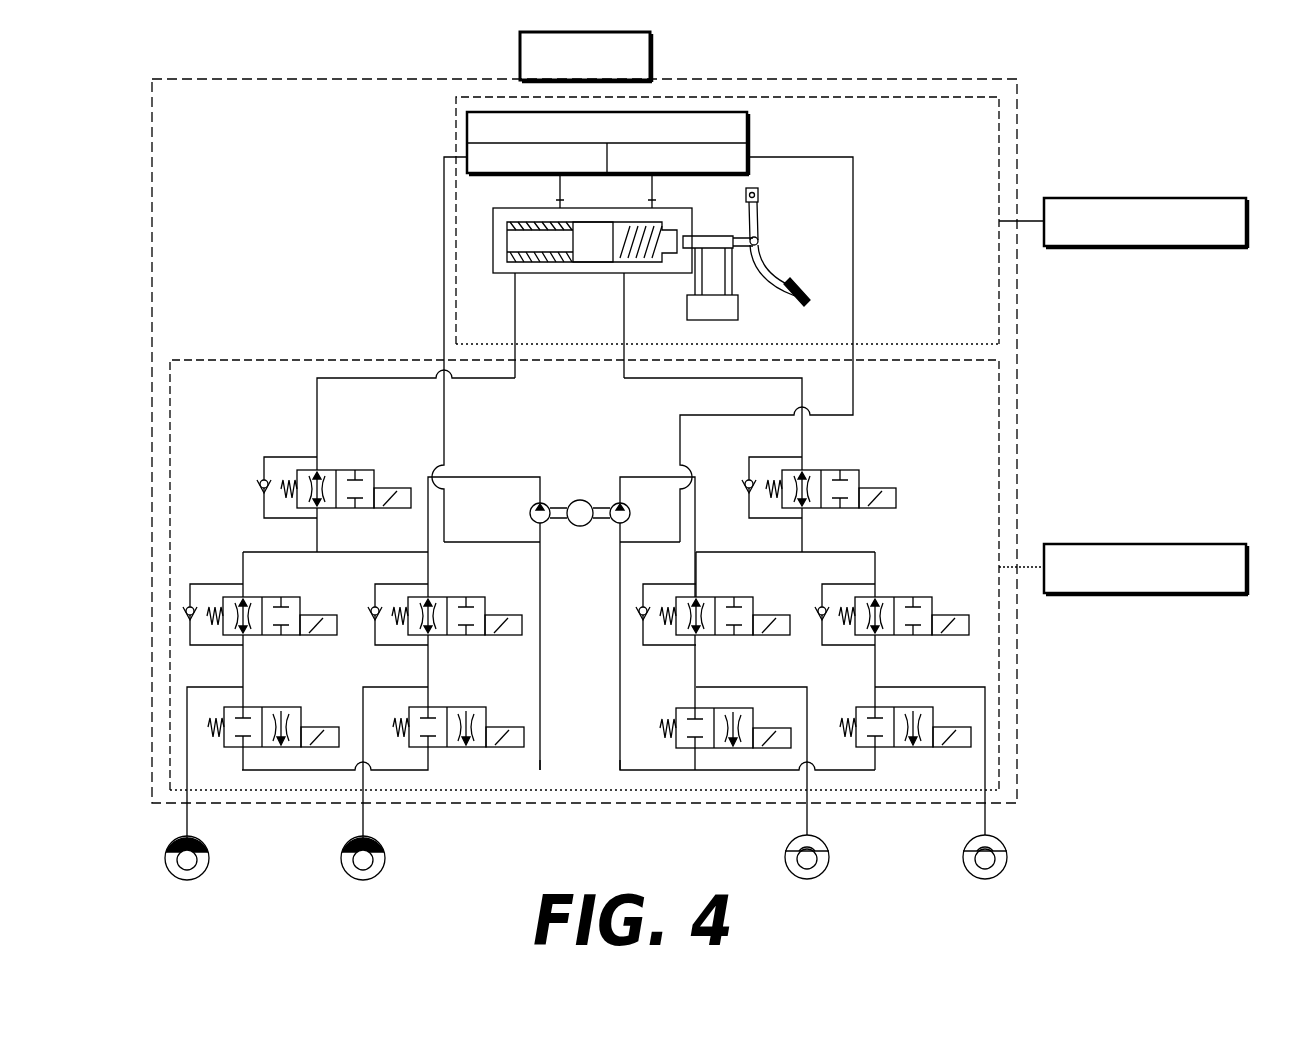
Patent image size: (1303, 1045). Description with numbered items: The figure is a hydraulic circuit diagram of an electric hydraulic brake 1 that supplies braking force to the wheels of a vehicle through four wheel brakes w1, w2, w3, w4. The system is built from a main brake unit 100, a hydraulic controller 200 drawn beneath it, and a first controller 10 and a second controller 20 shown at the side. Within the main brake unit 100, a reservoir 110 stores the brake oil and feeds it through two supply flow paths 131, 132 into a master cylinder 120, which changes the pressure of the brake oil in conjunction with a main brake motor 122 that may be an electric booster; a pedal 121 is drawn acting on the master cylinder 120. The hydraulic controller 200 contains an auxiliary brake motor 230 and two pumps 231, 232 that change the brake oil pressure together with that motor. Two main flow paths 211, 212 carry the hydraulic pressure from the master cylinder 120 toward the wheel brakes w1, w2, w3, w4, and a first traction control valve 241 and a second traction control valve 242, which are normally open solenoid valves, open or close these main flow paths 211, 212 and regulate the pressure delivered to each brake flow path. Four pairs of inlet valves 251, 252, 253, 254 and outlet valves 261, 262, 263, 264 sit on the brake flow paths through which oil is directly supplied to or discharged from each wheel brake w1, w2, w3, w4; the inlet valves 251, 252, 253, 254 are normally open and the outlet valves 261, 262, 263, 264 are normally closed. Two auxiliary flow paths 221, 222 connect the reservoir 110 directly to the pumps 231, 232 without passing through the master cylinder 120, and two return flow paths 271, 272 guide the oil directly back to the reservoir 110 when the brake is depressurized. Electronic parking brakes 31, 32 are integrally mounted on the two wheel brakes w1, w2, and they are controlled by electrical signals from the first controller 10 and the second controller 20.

The electric hydraulic brake 1 is at (110, 68).
The first controller 10 is at (1193, 197).
The second controller 20 is at (1200, 544).
The main brake unit 100 is at (1003, 310).
The hydraulic controller 200 is at (1003, 448).
The reservoir 110 is at (750, 135).
The master cylinder 120 is at (592, 268).
The brake pedal 121 is at (770, 259).
The main brake motor 122 is at (738, 305).
The supply flow path 131 is at (558, 202).
The supply flow path 132 is at (660, 202).
The main flow path 211 is at (317, 403).
The main flow path 212 is at (800, 384).
The auxiliary flow path 221 is at (446, 410).
The auxiliary flow path 222 is at (857, 388).
The auxiliary brake motor 230 is at (580, 500).
The pump 231 is at (542, 503).
The pump 232 is at (618, 526).
The first traction control valve 241 is at (350, 470).
The second traction control valve 242 is at (872, 488).
The inlet valve 251 is at (318, 617).
The inlet valve 252 is at (500, 617).
The inlet valve 253 is at (768, 617).
The inlet valve 254 is at (948, 617).
The outlet valve 261 is at (320, 727).
The outlet valve 262 is at (505, 727).
The outlet valve 263 is at (682, 708).
The outlet valve 264 is at (862, 708).
The return flow path 271 is at (498, 772).
The return flow path 272 is at (658, 772).
The electronic parking brake 31 is at (175, 843).
The electronic parking brake 32 is at (352, 843).
The wheel brake w1 is at (198, 838).
The wheel brake w2 is at (375, 838).
The wheel brake w3 is at (818, 836).
The wheel brake w4 is at (996, 836).